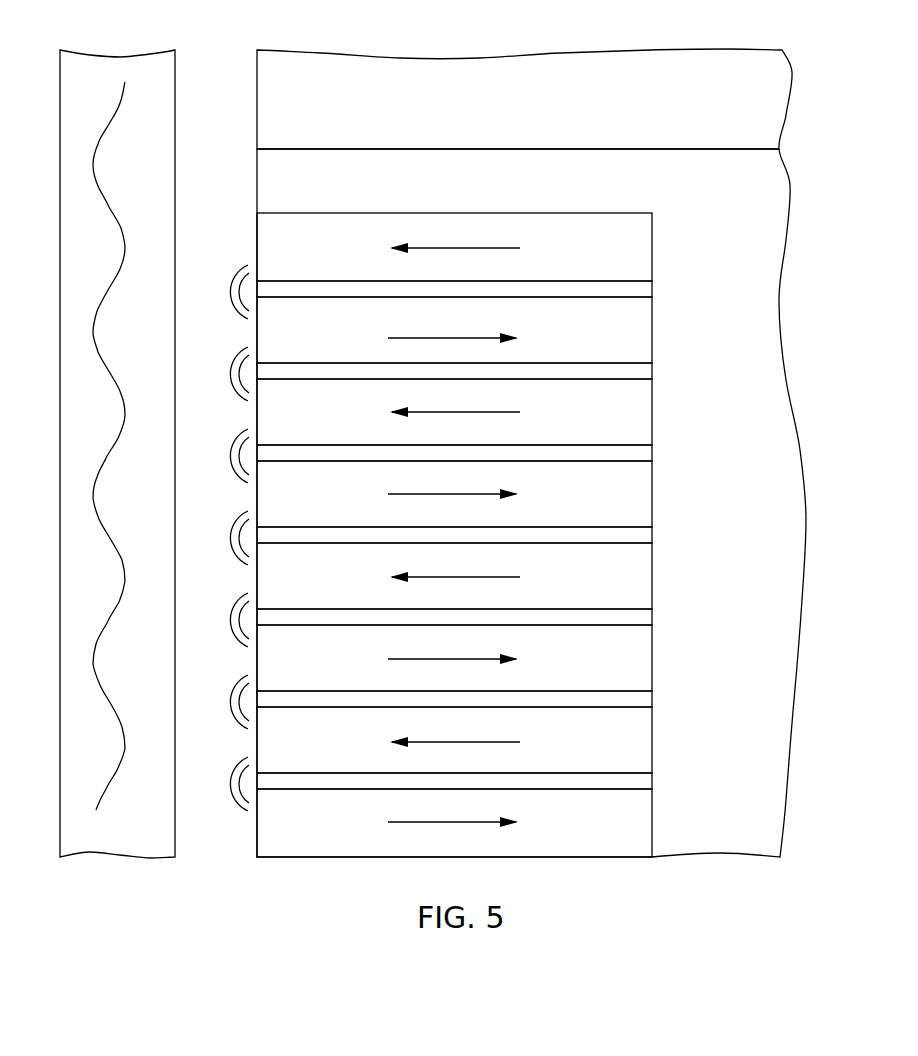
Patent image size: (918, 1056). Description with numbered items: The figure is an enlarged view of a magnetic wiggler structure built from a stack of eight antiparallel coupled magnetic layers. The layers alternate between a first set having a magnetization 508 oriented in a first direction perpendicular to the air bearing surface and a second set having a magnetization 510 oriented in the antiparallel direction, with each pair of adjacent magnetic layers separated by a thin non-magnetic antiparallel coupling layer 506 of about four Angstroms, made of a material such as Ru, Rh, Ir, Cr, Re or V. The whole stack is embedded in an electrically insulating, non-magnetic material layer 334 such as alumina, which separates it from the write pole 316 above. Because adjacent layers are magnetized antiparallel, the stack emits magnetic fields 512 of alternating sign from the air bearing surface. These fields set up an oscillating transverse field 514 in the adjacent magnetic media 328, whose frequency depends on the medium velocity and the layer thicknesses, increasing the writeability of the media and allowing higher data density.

The magnetic media 328 is at (127, 67).
The transverse field 514 is at (95, 143).
The write pole 316 is at (560, 100).
The electrically insulating, non-magnetic material layer 334 is at (544, 182).
The non-magnetic antiparallel coupling layer 506 is at (640, 291).
The magnetization 508 is at (483, 247).
The magnetization 510 is at (467, 337).
The magnetic fields 512 is at (246, 269).